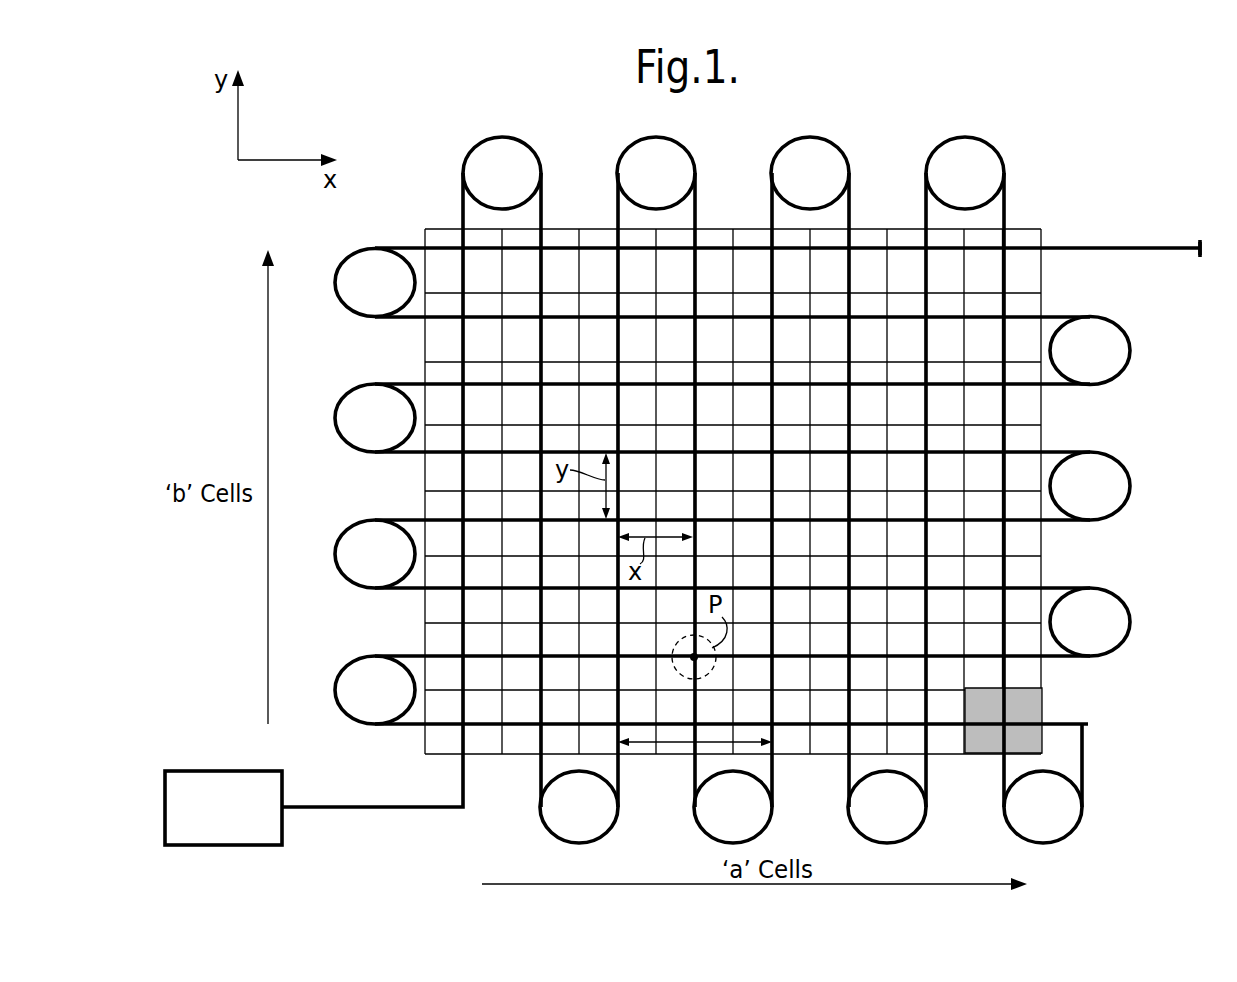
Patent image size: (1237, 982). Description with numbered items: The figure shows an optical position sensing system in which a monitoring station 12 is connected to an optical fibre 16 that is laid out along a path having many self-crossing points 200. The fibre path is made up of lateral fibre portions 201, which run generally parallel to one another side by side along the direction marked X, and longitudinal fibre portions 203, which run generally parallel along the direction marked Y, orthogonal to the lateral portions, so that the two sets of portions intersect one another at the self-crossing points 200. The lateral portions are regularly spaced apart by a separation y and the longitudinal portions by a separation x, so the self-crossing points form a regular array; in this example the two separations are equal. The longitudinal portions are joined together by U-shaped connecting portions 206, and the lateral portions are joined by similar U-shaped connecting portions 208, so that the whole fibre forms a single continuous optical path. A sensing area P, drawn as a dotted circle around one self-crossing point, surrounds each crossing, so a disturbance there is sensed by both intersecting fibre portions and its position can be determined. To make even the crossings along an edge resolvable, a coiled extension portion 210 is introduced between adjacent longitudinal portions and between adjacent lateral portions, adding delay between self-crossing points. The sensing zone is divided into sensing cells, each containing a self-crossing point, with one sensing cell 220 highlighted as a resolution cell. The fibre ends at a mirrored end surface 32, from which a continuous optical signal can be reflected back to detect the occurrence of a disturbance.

The monitoring station 12 is at (210, 790).
The optical fibre 16 is at (1105, 248).
The mirrored end surface 32 is at (1203, 258).
The self-crossing points 200 is at (615, 248).
The lateral fibre portions 201 is at (1033, 450).
The longitudinal fibre portions 203 is at (926, 205).
The U-shaped connecting portions 206 is at (463, 207).
The U-shaped connecting portions 208 is at (1065, 522).
The extension portion 210 is at (1115, 375).
The sensing cell 220 is at (1043, 708).